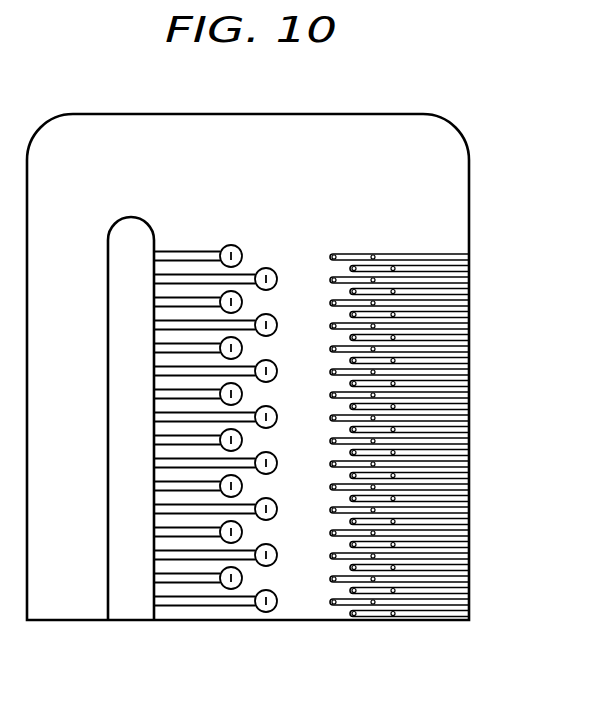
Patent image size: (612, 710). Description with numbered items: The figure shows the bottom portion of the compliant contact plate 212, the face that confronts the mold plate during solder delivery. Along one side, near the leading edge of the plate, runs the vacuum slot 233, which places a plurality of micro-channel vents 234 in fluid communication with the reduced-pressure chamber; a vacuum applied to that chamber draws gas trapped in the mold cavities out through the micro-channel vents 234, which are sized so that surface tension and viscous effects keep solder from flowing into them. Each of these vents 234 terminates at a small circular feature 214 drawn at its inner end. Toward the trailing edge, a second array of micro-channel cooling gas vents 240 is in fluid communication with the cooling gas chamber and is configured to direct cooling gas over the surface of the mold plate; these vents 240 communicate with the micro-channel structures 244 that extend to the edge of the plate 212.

The compliant contact plate 212 is at (470, 176).
The contact terminals 214 is at (266, 268).
The vacuum slot 233 is at (127, 622).
The micro-channel vents 234 is at (193, 270).
The micro-channel cooling gas vents 240 is at (338, 252).
The micro-channel structures 244 is at (470, 280).